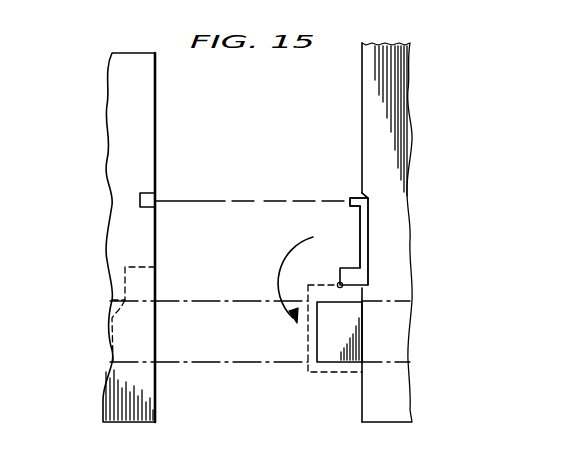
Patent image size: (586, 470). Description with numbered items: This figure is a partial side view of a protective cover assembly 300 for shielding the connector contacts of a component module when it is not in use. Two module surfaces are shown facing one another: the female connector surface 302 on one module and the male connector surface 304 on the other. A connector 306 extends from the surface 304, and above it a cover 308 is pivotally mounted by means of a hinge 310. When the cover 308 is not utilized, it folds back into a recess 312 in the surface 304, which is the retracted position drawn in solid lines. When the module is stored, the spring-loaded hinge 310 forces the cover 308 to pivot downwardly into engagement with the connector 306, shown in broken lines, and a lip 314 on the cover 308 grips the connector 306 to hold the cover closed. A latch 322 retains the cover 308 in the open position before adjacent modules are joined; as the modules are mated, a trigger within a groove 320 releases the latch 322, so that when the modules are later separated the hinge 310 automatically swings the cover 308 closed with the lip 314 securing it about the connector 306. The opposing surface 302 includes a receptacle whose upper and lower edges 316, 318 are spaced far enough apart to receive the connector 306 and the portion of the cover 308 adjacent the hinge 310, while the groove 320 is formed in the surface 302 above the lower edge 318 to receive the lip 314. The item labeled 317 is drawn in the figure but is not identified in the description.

The protective cover assembly 300 is at (334, 229).
The female connector surface 302 is at (156, 406).
The male connector surface 304 is at (361, 412).
The connector 306 is at (334, 346).
The cover 308 is at (350, 198).
The hinge 310 is at (337, 284).
The recess 312 is at (370, 231).
The lip 314 is at (360, 208).
The upper edge of receptacle 316 is at (108, 314).
The gap 317 is at (164, 351).
The lower edge of receptacle 318 is at (110, 350).
The groove 320 is at (157, 200).
The latch 322 is at (360, 194).